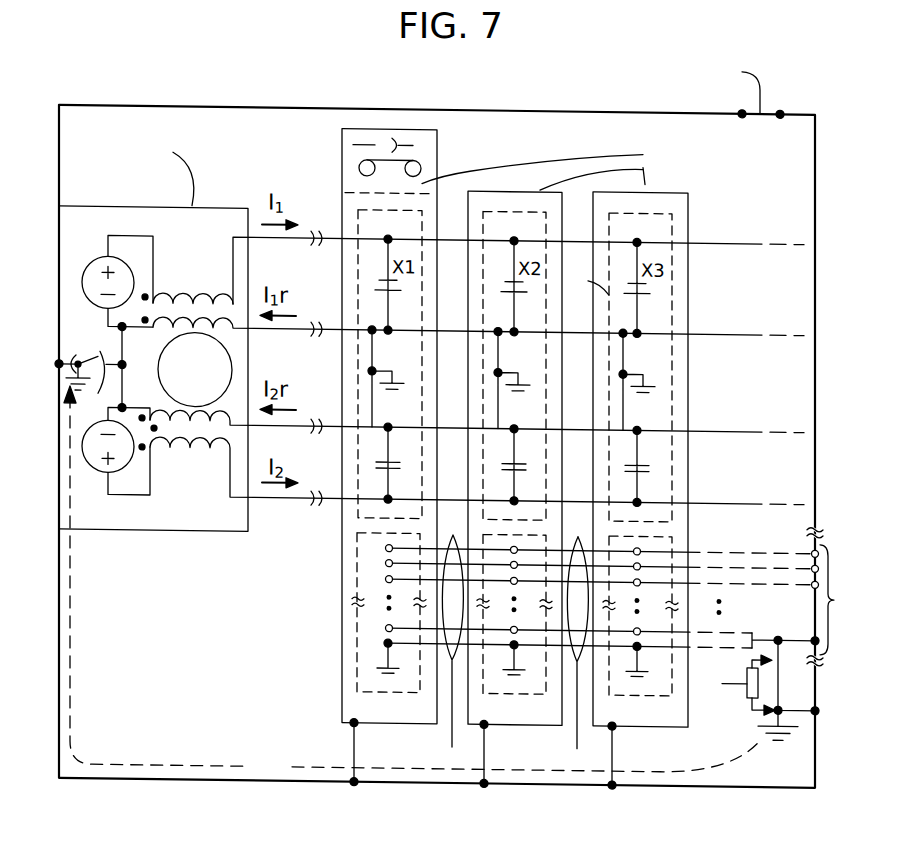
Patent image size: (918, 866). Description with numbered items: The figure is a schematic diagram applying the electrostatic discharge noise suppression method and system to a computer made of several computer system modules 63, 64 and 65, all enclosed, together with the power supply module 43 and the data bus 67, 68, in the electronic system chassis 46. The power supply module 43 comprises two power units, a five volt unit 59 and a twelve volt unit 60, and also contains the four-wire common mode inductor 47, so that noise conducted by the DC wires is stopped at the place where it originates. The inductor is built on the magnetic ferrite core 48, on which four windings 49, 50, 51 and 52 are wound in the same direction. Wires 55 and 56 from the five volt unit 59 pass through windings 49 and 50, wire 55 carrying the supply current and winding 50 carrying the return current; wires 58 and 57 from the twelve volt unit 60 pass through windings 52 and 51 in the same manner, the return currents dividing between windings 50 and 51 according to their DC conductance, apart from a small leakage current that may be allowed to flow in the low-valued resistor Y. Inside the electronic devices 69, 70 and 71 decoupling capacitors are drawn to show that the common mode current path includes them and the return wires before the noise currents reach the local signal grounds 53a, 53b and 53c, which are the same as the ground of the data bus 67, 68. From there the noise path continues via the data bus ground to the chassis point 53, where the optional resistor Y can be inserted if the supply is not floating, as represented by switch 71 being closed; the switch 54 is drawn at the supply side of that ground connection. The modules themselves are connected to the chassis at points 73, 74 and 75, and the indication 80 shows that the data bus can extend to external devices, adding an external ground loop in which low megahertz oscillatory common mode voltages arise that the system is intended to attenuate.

The power supply module 43 is at (222, 204).
The electronic system chassis 46 is at (592, 104).
The four-wire common mode inductor 47 is at (188, 276).
The magnetic ferrite core 48 is at (228, 352).
The winding 49 is at (200, 290).
The winding 50 is at (456, 340).
The winding 51 is at (471, 412).
The winding 52 is at (456, 470).
The chassis point 53 is at (765, 727).
The local signal ground 53a is at (372, 695).
The local signal ground 53b is at (498, 695).
The local signal ground 53c is at (621, 695).
The ground switch 54 is at (88, 362).
The wire 55 is at (128, 236).
The wire 56 is at (137, 368).
The wire 57 is at (133, 405).
The wire 58 is at (134, 481).
The +5 volt power unit 59 is at (93, 259).
The +12 volt power unit 60 is at (104, 463).
The computer system module 63 is at (437, 154).
The computer system module 64 is at (488, 186).
The computer system module 65 is at (624, 184).
The data bus 67 is at (462, 649).
The data bus 68 is at (586, 651).
The electronic device internals 69 is at (356, 287).
The electronic device internals 70 is at (483, 287).
The electronic device internals / switch 71 is at (413, 519).
The chassis connection point 73 is at (358, 745).
The chassis connection point 74 is at (487, 745).
The chassis connection point 75 is at (614, 745).
The data bus extension to external devices 80 is at (630, 597).